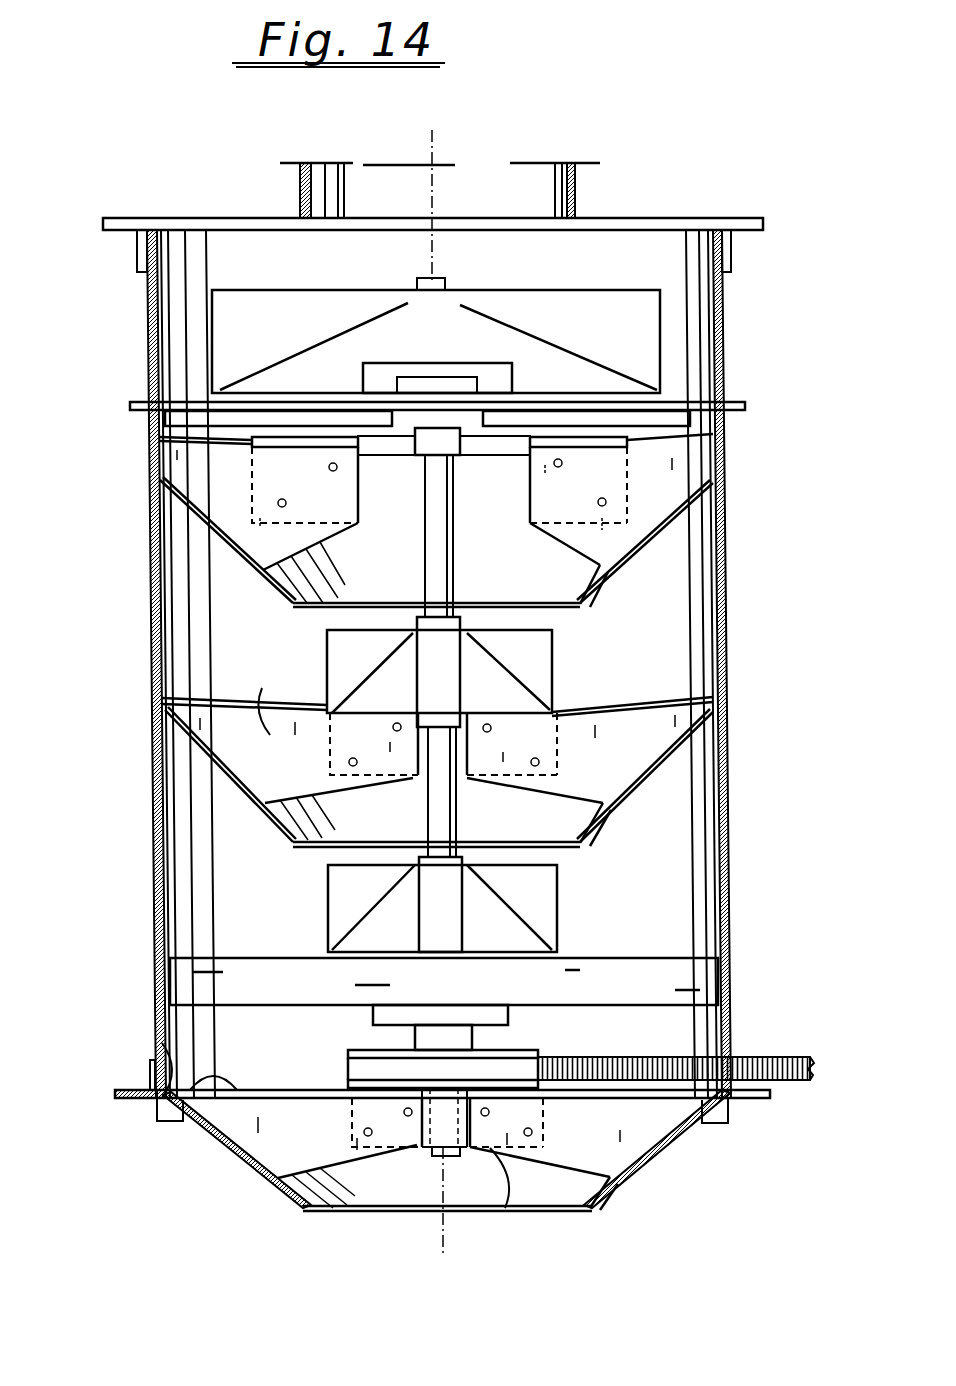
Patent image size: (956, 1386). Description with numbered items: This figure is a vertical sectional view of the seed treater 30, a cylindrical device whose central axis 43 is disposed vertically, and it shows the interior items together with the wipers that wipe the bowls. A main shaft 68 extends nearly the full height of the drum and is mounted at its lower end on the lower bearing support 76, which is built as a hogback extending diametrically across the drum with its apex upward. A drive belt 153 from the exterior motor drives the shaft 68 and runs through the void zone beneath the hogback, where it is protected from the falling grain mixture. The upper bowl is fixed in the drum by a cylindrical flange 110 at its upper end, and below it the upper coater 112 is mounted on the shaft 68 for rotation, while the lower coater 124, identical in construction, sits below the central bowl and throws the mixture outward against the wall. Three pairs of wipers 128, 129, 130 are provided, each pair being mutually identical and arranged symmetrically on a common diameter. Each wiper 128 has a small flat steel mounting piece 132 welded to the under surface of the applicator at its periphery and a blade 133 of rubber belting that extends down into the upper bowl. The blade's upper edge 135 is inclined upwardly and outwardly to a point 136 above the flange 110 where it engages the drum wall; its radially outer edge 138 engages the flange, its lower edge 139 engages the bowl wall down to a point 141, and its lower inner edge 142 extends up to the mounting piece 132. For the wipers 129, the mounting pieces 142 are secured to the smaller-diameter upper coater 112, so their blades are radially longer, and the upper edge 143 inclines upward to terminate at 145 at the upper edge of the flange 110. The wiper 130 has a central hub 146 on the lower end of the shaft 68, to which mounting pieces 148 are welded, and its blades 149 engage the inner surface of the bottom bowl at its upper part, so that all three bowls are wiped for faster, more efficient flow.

The seed treater 30 is at (150, 195).
The central axis 43 is at (433, 197).
The main shaft 68 is at (455, 963).
The lower bearing support 76 is at (655, 955).
The cylindrical flange 110 is at (722, 465).
The upper coater 112 is at (547, 660).
The lower coater 124 is at (337, 920).
The wiper 128 is at (678, 517).
The wiper 129 is at (650, 790).
The wiper 130 is at (692, 1122).
The mounting piece 132 is at (533, 502).
The blade 133 is at (642, 523).
The upper edge 135 is at (693, 398).
The point 136 is at (150, 434).
The radially outer edge 138 is at (152, 457).
The lower edge 139 is at (203, 520).
The point 141 is at (260, 573).
The lower/inner edge 142 is at (323, 547).
The upper edge 143 is at (175, 1137).
The termination point 145 is at (153, 690).
The central hub 146 is at (505, 1209).
The mounting piece 148 is at (385, 1153).
The blade 149 is at (228, 1150).
The drive belt 153 is at (767, 1053).